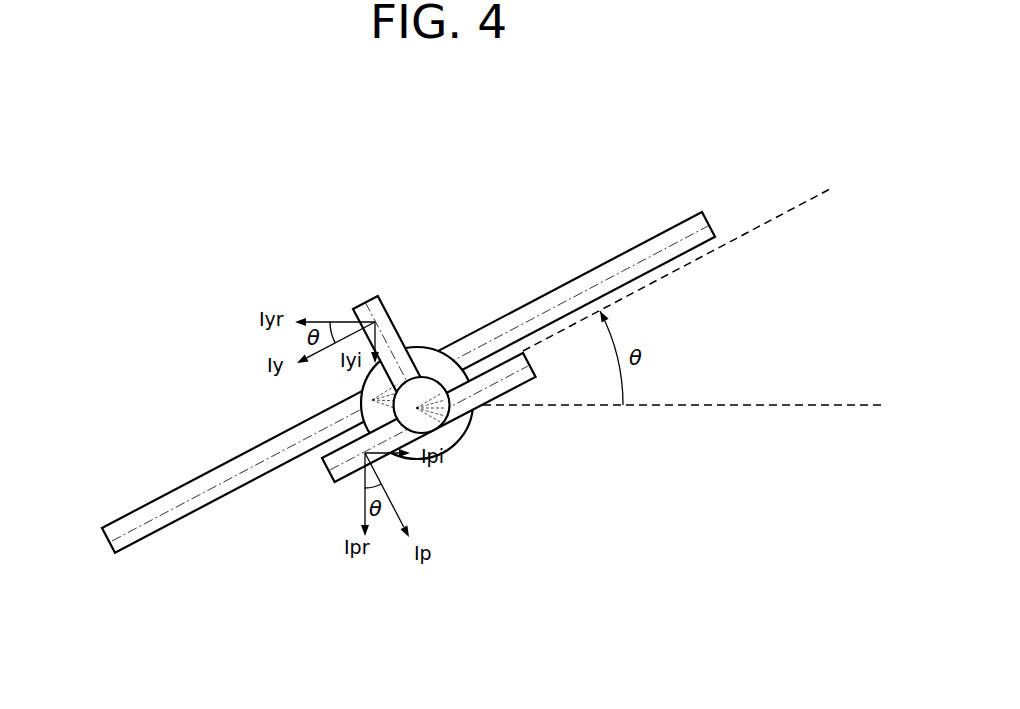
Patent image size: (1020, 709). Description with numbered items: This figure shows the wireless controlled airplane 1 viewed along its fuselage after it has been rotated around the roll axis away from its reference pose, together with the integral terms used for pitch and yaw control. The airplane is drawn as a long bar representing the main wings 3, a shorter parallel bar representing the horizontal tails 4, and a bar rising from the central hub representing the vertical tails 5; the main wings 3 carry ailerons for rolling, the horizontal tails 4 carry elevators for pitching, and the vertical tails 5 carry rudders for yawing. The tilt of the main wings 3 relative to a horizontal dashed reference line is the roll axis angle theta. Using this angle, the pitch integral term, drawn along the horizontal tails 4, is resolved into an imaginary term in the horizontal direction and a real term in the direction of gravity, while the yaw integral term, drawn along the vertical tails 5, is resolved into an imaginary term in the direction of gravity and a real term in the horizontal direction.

The wireless controlled airplane 1 is at (100, 180).
The main wings 3 is at (675, 232).
The horizontal tails 4 is at (334, 466).
The vertical tails 5 is at (370, 300).